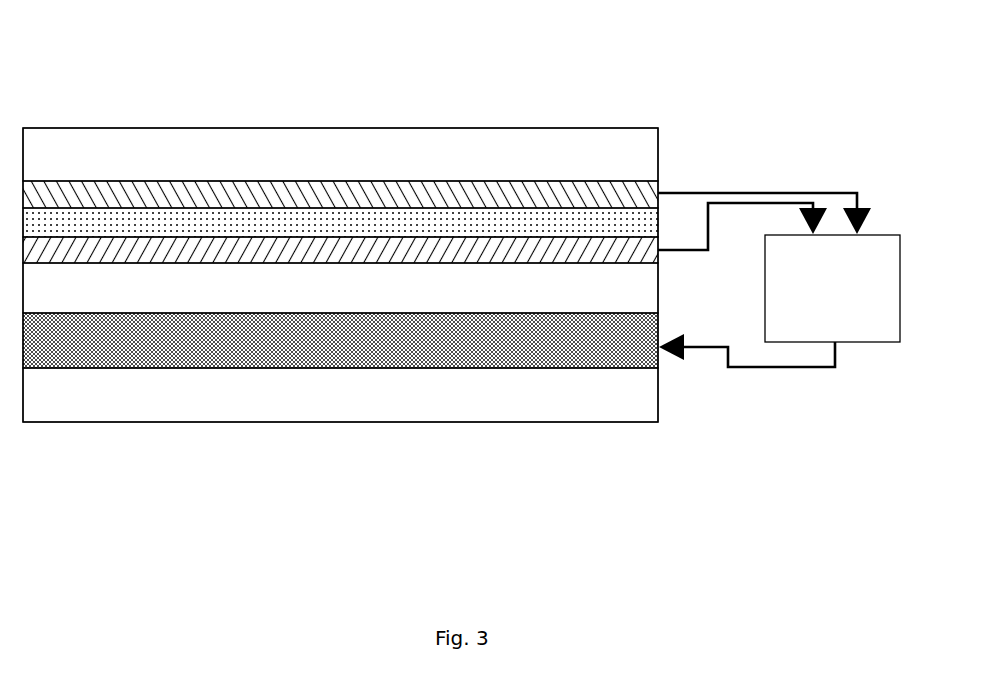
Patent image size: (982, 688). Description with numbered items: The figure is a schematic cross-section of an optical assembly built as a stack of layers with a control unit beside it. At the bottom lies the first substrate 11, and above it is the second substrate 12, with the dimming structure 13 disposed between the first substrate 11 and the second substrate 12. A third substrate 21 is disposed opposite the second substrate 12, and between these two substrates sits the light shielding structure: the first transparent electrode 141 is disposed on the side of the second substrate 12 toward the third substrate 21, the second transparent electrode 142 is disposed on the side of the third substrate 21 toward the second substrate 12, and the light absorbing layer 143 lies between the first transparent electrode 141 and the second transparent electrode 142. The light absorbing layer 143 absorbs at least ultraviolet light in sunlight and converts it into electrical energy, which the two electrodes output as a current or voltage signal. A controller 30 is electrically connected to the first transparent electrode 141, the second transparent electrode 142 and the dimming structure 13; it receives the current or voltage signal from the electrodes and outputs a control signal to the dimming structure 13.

The third substrate 21 is at (77, 128).
The second transparent electrode 142 is at (208, 193).
The light absorbing layer 143 is at (383, 218).
The first transparent electrode 141 is at (543, 248).
The second substrate 12 is at (252, 302).
The dimming structure 13 is at (523, 368).
The first substrate 11 is at (77, 422).
The controller 30 is at (873, 342).